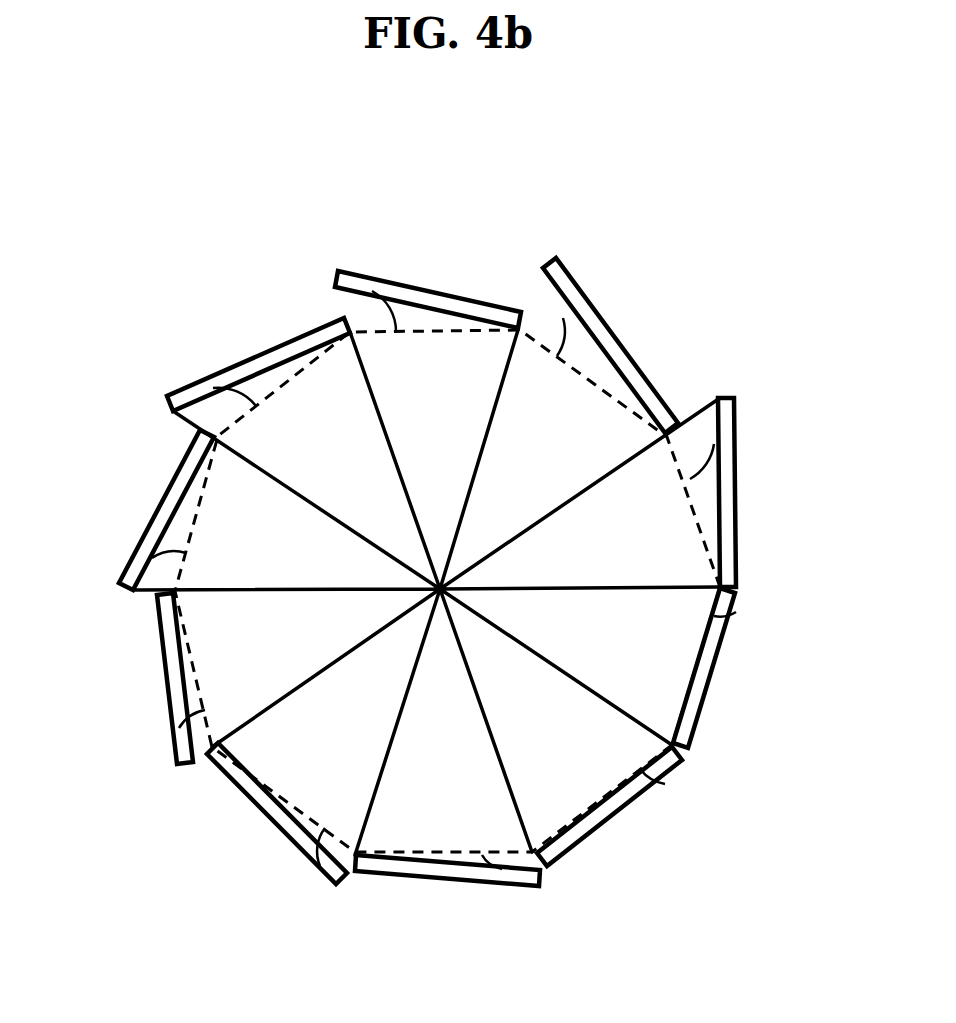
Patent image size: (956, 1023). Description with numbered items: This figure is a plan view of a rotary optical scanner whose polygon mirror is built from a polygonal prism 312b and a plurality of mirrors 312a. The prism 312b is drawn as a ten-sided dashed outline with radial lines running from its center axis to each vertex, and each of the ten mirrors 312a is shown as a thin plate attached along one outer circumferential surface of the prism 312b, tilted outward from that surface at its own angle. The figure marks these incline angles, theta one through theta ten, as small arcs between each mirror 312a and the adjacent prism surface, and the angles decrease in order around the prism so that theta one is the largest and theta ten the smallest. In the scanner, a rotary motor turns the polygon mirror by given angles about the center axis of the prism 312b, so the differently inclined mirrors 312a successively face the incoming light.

The mirrors 312a is at (472, 303).
The polygonal prism 312b is at (623, 360).